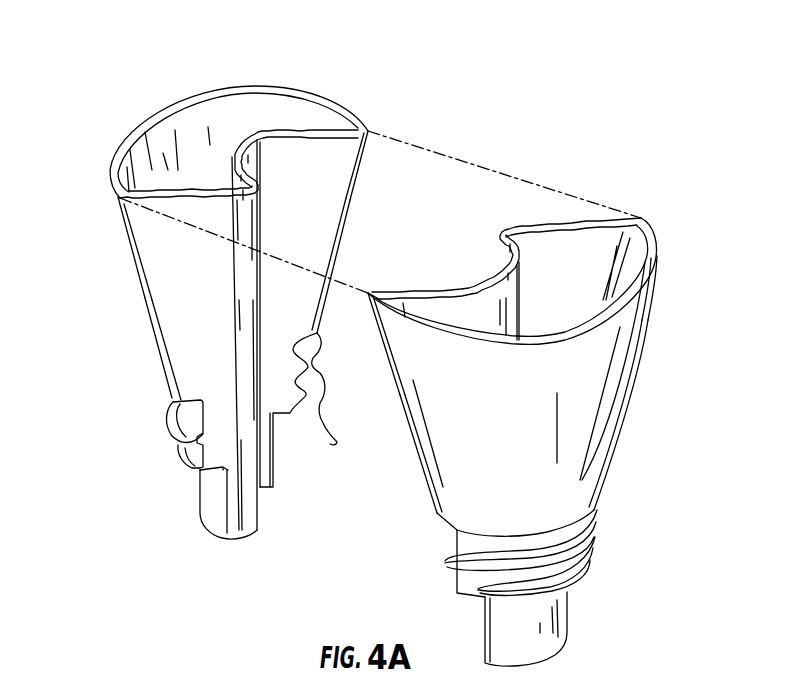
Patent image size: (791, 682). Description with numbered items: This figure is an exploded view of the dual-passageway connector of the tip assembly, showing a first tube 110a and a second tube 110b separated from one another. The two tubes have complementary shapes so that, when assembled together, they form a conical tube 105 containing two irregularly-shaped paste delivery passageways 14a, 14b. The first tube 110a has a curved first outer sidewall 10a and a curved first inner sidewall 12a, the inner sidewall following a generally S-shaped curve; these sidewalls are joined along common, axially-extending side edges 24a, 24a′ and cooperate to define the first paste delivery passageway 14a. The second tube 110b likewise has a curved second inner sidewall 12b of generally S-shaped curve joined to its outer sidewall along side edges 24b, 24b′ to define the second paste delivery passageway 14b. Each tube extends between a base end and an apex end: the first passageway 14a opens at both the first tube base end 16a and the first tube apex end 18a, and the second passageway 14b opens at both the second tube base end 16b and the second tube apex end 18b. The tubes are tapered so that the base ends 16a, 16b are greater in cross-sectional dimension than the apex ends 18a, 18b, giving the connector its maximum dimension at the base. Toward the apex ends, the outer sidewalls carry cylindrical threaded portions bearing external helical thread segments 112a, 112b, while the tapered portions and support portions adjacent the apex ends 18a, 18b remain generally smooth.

The conical tube 105 is at (78, 132).
The first outer sidewall 10a is at (607, 346).
The first inner sidewall 12a is at (463, 288).
The second inner sidewall 12b is at (328, 165).
The first paste delivery passageway 14a is at (643, 240).
The second paste delivery passageway 14b is at (233, 116).
The first tube base end 16a is at (640, 281).
The second tube base end 16b is at (338, 100).
The first tube apex end 18a is at (563, 653).
The second tube apex end 18b is at (207, 533).
The side edge 24a is at (370, 298).
The side edge 24a′ is at (645, 221).
The side edge 24b is at (123, 233).
The side edge 24b′ is at (370, 130).
The first tube 110a is at (600, 397).
The second tube 110b is at (148, 290).
The external helical thread segment 112a is at (595, 507).
The external helical thread segment 112b is at (333, 442).